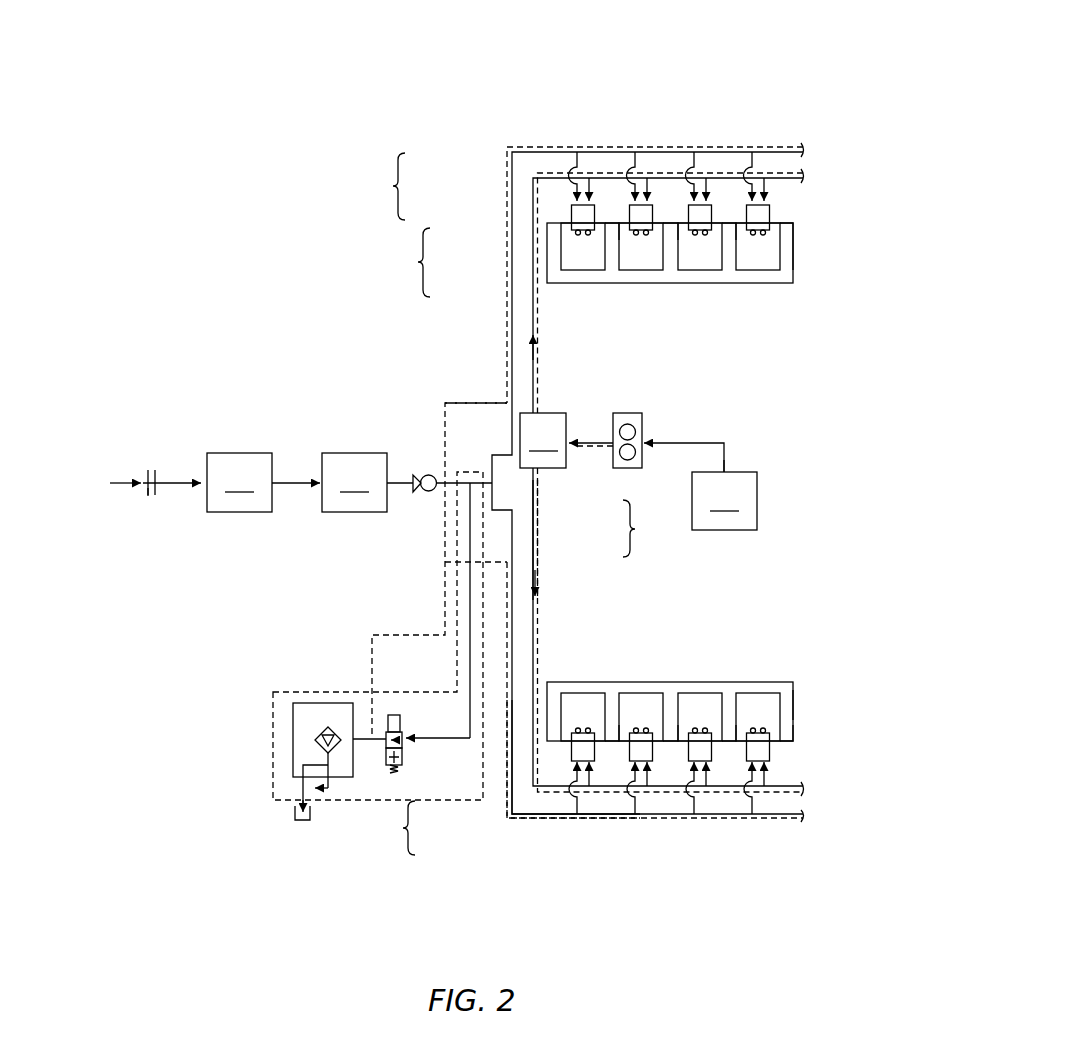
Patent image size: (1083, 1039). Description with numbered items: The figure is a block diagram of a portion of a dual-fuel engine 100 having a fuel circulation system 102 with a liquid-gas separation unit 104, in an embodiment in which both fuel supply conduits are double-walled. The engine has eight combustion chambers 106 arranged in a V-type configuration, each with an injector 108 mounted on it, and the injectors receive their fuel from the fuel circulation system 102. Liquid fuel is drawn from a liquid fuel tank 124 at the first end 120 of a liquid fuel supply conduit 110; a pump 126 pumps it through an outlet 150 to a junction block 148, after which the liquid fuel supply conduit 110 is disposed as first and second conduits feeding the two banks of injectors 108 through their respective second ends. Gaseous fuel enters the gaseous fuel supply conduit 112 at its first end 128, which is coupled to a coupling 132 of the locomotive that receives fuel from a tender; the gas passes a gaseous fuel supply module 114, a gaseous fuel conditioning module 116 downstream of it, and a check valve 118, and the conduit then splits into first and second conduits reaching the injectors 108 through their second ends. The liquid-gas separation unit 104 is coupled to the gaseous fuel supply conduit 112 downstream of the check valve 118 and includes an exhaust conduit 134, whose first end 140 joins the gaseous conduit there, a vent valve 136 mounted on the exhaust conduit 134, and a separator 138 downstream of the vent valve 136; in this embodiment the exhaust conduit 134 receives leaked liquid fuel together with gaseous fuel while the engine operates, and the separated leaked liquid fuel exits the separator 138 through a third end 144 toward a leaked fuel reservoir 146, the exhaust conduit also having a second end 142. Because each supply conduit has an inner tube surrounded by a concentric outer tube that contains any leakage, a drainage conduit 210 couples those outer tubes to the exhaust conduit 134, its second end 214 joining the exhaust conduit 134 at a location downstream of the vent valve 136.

The dual-fuel engine 100 is at (215, 179).
The fuel circulation system 102 is at (330, 330).
The liquid-gas separation unit 104 is at (273, 735).
The combustion chamber 106 is at (798, 282).
The injector 108 is at (777, 211).
The liquid fuel supply conduit 110 is at (698, 440).
The gaseous fuel supply conduit 112 is at (294, 468).
The gaseous fuel supply module 114 is at (239, 482).
The gaseous fuel conditioning module 116 is at (354, 482).
The check valve 118 is at (413, 475).
The first end 120 is at (725, 467).
The liquid fuel tank 124 is at (724, 501).
The pump 126 is at (642, 417).
The first end 128 is at (160, 470).
The coupling 132 is at (148, 495).
The exhaust conduit 134 is at (470, 574).
The vent valve 136 is at (392, 715).
The separator 138 is at (302, 703).
The first end 140 is at (465, 486).
The second end 142 is at (327, 790).
The third end 144 is at (303, 790).
The leaked fuel reservoir 146 is at (295, 813).
The junction block 148 is at (543, 440).
The outlet 150 is at (613, 440).
The drainage conduit 210 is at (431, 388).
The second end 214 is at (372, 738).